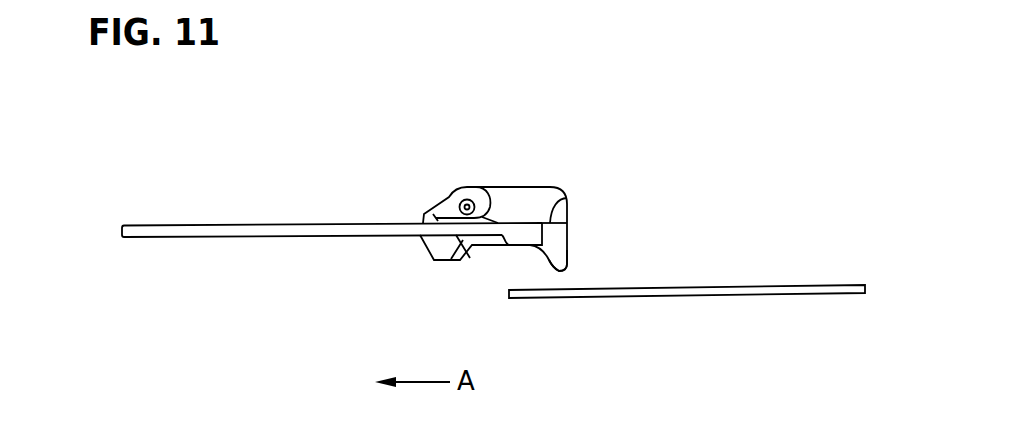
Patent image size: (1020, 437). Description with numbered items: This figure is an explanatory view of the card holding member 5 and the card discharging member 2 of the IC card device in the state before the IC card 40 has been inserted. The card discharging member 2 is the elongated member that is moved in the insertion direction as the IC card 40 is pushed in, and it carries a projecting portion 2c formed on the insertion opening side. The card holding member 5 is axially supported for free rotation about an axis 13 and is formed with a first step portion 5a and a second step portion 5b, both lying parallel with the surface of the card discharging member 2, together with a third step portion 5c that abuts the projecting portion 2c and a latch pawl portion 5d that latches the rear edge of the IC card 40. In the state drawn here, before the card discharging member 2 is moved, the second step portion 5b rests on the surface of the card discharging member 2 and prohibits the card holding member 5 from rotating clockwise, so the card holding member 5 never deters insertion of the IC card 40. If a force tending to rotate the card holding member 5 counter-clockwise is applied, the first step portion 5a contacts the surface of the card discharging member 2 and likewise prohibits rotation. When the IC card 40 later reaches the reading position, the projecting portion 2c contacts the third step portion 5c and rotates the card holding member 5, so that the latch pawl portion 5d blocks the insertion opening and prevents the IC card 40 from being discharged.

The card discharging member 2 is at (368, 223).
The projecting portion 2c is at (503, 252).
The card holding member 5 is at (523, 181).
The first step portion 5a is at (433, 212).
The second step portion 5b is at (567, 198).
The third step portion 5c is at (436, 261).
The latch pawl portion 5d is at (558, 254).
The axis 13 is at (465, 199).
The IC card 40 is at (687, 286).